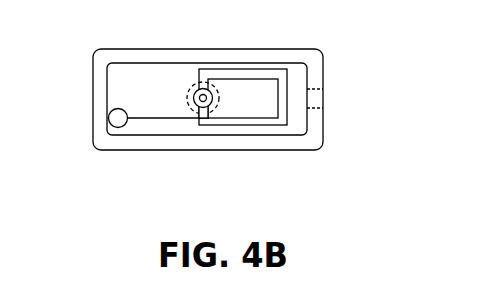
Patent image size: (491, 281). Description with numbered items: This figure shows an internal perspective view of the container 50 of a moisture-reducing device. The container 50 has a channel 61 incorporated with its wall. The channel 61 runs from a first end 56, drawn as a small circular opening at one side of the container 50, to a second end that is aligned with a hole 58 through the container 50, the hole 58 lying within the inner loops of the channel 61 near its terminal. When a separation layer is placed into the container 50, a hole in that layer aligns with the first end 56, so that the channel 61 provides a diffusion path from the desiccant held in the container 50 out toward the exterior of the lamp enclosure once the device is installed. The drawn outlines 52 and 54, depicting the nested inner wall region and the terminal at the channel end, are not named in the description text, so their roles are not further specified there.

The container 50 is at (194, 153).
The inner region / card layer 52 is at (326, 96).
The chip module / connection terminal 54 is at (187, 78).
The first end 56 is at (106, 117).
The hole 58 is at (211, 101).
The channel 61 is at (260, 65).